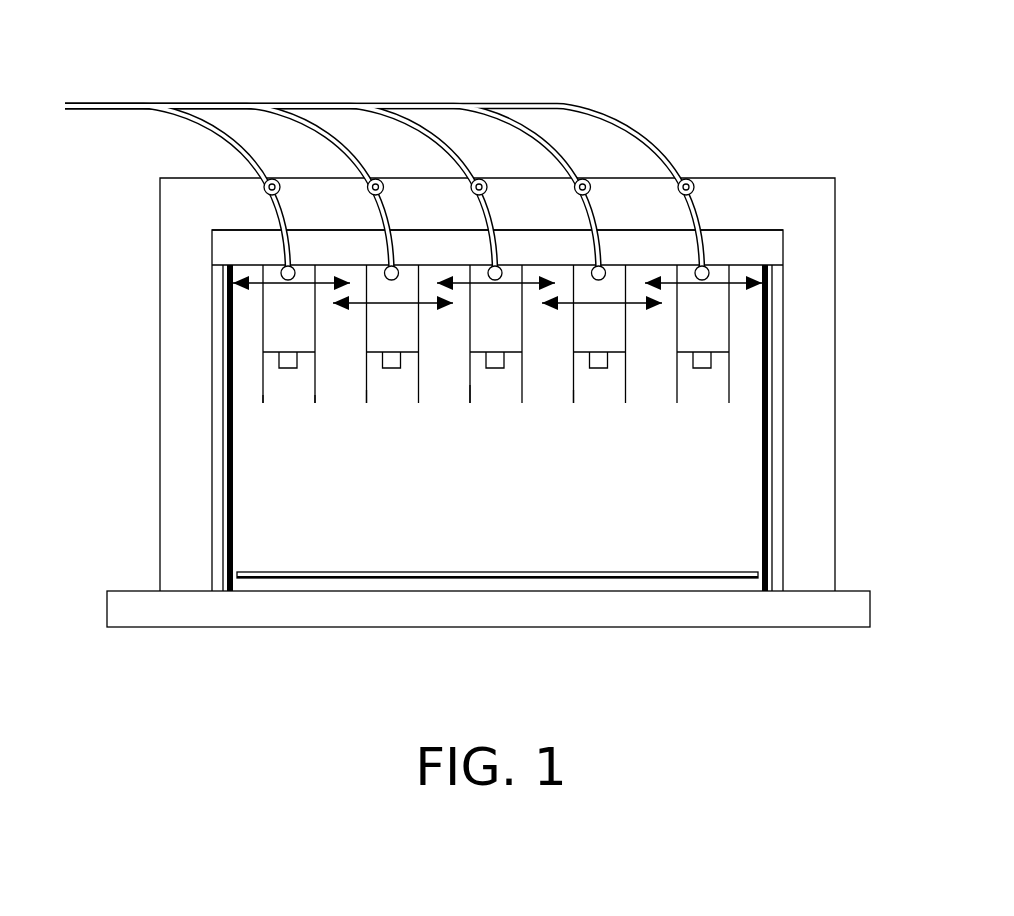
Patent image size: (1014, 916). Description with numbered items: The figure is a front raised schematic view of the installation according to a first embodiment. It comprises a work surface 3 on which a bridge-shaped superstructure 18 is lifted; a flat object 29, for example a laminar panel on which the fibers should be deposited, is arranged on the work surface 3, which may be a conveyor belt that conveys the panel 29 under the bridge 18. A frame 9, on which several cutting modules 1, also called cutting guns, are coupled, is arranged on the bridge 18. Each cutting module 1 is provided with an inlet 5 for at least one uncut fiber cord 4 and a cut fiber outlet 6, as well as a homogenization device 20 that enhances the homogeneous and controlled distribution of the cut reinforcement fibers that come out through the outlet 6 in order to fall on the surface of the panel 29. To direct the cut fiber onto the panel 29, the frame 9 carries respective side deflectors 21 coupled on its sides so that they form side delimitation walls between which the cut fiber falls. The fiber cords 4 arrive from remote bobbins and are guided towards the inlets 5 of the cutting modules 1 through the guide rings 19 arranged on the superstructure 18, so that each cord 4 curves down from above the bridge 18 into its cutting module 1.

The cutting module 1 is at (497, 310).
The work surface 3 is at (536, 601).
The fiber cord 4 is at (285, 115).
The inlet of uncut reinforcement fiber cord 5 is at (740, 287).
The outlet of cut reinforcement fibers 6 is at (288, 356).
The shared cutting module frame 9 is at (737, 248).
The superstructure of a work bench 18 is at (160, 249).
The guide rings 19 is at (262, 181).
The homogenization device of the distribution of the cut reinforcement fibers 20 is at (575, 390).
The side deflectors 21 is at (227, 307).
The object to be provided with cut fiberglass 29 is at (357, 582).